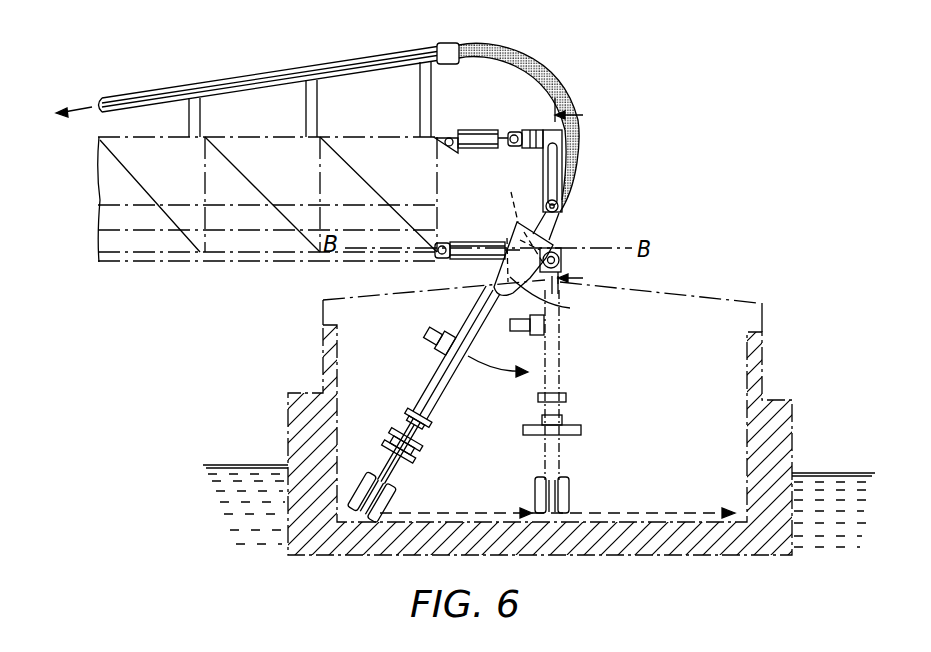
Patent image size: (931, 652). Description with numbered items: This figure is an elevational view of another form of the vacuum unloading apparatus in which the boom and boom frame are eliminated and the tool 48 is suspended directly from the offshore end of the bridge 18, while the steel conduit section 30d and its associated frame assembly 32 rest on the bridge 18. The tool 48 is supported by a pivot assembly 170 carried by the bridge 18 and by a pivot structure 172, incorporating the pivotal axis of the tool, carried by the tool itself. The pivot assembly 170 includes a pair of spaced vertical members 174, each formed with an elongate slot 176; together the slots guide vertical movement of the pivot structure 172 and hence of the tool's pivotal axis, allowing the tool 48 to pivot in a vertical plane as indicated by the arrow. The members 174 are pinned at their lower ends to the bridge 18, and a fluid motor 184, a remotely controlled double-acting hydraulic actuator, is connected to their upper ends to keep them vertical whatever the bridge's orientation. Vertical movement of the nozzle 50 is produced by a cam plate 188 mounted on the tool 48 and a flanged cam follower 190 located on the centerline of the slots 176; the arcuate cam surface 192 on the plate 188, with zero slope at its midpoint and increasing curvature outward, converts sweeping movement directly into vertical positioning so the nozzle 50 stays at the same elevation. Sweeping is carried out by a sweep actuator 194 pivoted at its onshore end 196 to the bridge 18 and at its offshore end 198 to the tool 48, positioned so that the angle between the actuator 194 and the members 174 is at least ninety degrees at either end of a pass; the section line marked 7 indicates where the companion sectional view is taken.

The steel conduit section 30d is at (240, 82).
The frame assembly 32 is at (318, 102).
The bridge 18 is at (180, 262).
The fluid motor 184 is at (483, 136).
The section line 7 is at (576, 186).
The vertical members 174 is at (562, 136).
The elongate slot 176 is at (557, 161).
The pivot structure 172 is at (564, 215).
The pivot assembly 170 is at (571, 228).
The cam follower 190 is at (558, 252).
The cam surface 192 is at (494, 272).
The offshore end 198 is at (519, 224).
The cam plate 188 is at (558, 300).
The sweep actuator 194 is at (465, 244).
The onshore end 196 is at (438, 246).
The tool 48 is at (436, 403).
The nozzle 50 is at (395, 453).